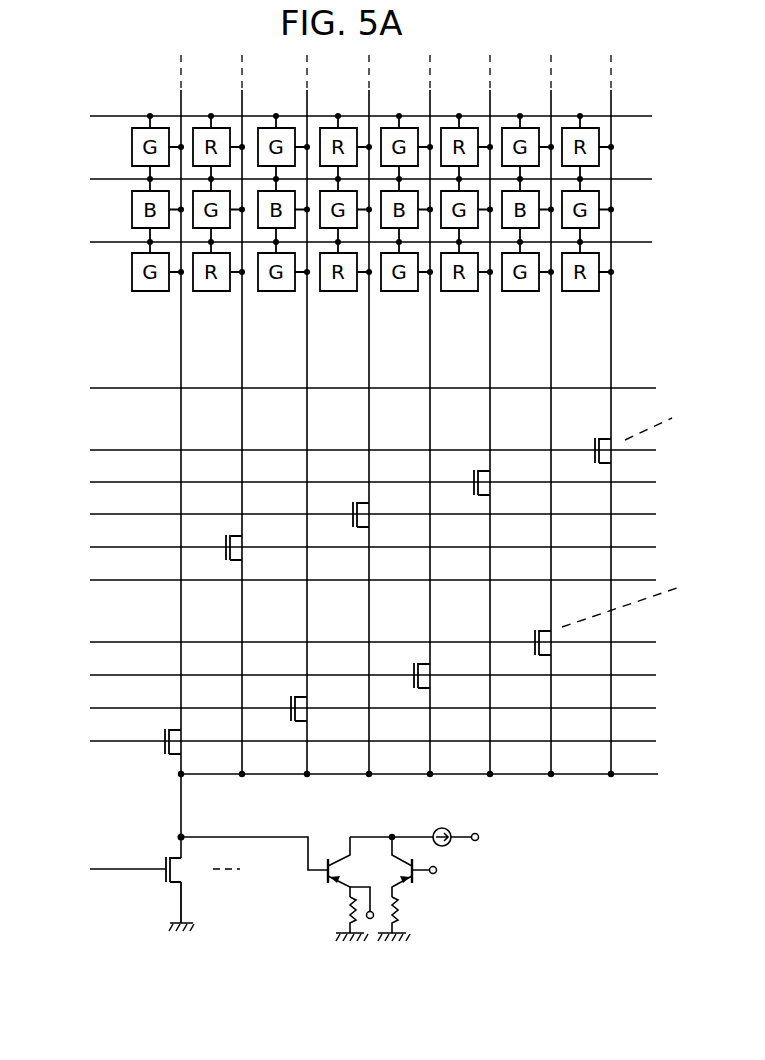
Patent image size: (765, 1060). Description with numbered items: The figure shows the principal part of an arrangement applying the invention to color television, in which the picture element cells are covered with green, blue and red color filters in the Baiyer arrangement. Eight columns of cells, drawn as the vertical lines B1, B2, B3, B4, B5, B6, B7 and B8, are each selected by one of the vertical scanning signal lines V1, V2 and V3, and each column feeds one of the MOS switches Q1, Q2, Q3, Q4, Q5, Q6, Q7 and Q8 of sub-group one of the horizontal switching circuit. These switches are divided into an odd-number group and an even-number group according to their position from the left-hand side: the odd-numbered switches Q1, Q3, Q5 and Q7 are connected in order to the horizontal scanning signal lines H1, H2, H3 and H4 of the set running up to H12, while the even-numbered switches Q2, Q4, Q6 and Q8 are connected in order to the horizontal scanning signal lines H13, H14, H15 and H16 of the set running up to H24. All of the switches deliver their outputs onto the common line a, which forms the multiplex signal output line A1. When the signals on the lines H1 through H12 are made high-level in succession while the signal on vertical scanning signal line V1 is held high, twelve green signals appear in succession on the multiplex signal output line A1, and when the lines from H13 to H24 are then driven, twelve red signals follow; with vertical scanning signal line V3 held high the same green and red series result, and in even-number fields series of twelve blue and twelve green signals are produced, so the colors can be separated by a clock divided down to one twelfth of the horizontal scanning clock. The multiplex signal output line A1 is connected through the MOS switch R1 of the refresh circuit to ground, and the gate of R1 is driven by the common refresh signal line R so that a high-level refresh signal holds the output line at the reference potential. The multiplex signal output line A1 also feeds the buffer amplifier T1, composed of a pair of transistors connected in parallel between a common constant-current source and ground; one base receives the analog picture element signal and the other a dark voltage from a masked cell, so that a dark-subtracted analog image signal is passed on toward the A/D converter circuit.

The bus line B1 is at (166, 414).
The bus line B2 is at (227, 414).
The bus line B3 is at (292, 414).
The bus line B4 is at (354, 414).
The bus line B5 is at (415, 414).
The bus line B6 is at (475, 414).
The bus line B7 is at (536, 414).
The bus line B8 is at (596, 414).
The vertical scanning signal line V1 is at (351, 242).
The vertical scanning signal line V2 is at (351, 179).
The vertical scanning signal line V3 is at (351, 116).
The horizontal scanning signal line H1 is at (344, 742).
The horizontal scanning signal line H2 is at (344, 709).
The horizontal scanning signal line H3 is at (344, 676).
The horizontal scanning signal line H4 is at (344, 643).
The horizontal scanning signal line H12 is at (344, 581).
The horizontal scanning signal line H13 is at (344, 548).
The horizontal scanning signal line H14 is at (344, 515).
The horizontal scanning signal line H15 is at (344, 483).
The horizontal scanning signal line H16 is at (344, 451).
The horizontal scanning signal line H24 is at (344, 389).
The MOS switch Q1 is at (157, 734).
The MOS switch Q2 is at (217, 539).
The MOS switch Q3 is at (282, 700).
The MOS switch Q4 is at (344, 506).
The MOS switch Q5 is at (405, 667).
The MOS switch Q6 is at (465, 474).
The MOS switch Q7 is at (594, 621).
The MOS switch Q8 is at (623, 436).
The output line a is at (426, 772).
The multiplex signal output line A1 is at (240, 822).
The refresh signal line R is at (165, 856).
The MOS switch R1 is at (165, 894).
The amplifier T1 is at (403, 884).